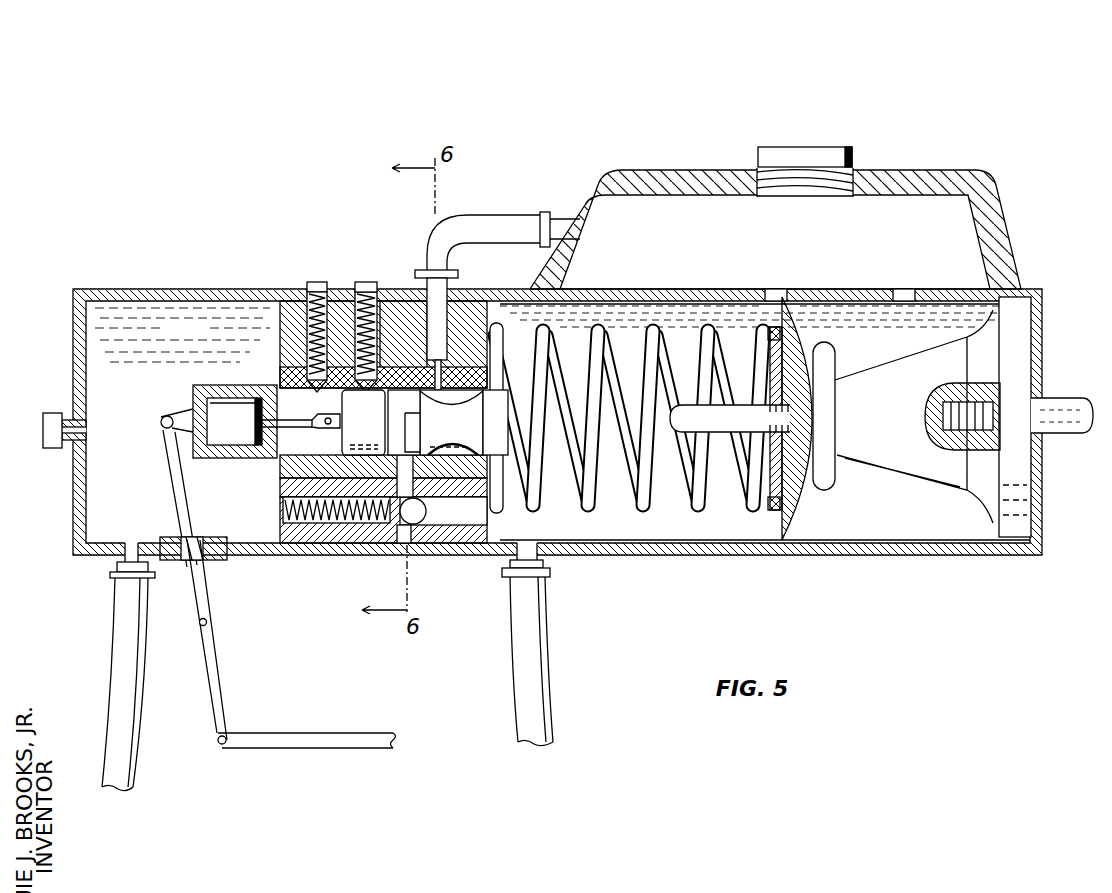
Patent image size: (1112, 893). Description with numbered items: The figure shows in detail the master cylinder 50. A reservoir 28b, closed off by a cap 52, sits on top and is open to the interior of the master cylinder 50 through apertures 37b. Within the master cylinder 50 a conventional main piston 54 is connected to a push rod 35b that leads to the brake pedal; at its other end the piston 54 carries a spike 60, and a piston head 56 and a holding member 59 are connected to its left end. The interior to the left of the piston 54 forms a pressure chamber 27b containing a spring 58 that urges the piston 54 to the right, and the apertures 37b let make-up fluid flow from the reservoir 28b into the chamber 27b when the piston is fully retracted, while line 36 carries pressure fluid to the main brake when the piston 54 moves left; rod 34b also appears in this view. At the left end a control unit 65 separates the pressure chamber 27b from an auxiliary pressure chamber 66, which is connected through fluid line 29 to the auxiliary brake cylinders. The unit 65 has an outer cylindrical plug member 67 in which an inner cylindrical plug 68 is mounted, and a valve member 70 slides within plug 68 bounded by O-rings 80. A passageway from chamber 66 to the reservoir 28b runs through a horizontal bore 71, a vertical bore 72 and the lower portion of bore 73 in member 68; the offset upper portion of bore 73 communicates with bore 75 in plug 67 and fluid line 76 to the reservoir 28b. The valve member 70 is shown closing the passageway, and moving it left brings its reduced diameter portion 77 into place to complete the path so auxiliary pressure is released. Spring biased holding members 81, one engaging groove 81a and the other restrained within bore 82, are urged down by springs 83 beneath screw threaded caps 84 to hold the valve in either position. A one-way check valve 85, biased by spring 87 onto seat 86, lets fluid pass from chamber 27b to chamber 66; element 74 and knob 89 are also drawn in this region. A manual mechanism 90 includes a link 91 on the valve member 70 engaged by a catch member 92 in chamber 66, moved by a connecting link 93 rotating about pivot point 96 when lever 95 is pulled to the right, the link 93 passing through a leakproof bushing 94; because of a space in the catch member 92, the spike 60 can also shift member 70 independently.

The pressure chamber 27b is at (638, 512).
The reservoir 28b is at (718, 241).
The fluid line 29 is at (142, 727).
The valve stem rod 34b is at (505, 455).
The push rod 35b is at (1068, 399).
The line 36 is at (542, 668).
The apertures 37b is at (755, 292).
The master cylinder 50 is at (1031, 275).
The cap 52 is at (841, 146).
The main piston 54 is at (927, 365).
The piston head 56 is at (808, 325).
The spring 58 is at (660, 336).
The holding member 59 is at (766, 500).
The spike 60 is at (718, 431).
The control unit 65 is at (388, 265).
The auxiliary pressure chamber 66 is at (172, 342).
The outer cylindrical plug member 67 is at (494, 323).
The inner cylindrical plug 68 is at (328, 452).
The valve member 70 is at (487, 435).
The horizontally extending bore 71 is at (282, 490).
The vertically extending bore 72 is at (403, 548).
The vertically extending bore 73 is at (446, 363).
The wall band 74 is at (282, 465).
The bore 75 is at (459, 305).
The fluid line 76 is at (478, 222).
The reduced diameter portion 77 is at (451, 423).
The O-rings 80 is at (385, 428).
The holding members 81 is at (325, 416).
The groove 81a is at (400, 420).
The bore 82 is at (362, 290).
The springs 83 is at (378, 290).
The screw threaded caps 84 is at (320, 280).
The one-way check valve 85 is at (418, 548).
The seat 86 is at (427, 508).
The spring 87 is at (283, 517).
The adjusting knob 89 is at (43, 428).
The mechanism 90 is at (194, 640).
The link 91 is at (256, 420).
The catch member 92 is at (193, 392).
The connecting link 93 is at (169, 460).
The leakproof bushing 94 is at (212, 578).
The manually actuable lever 95 is at (297, 750).
The pivot point 96 is at (207, 623).